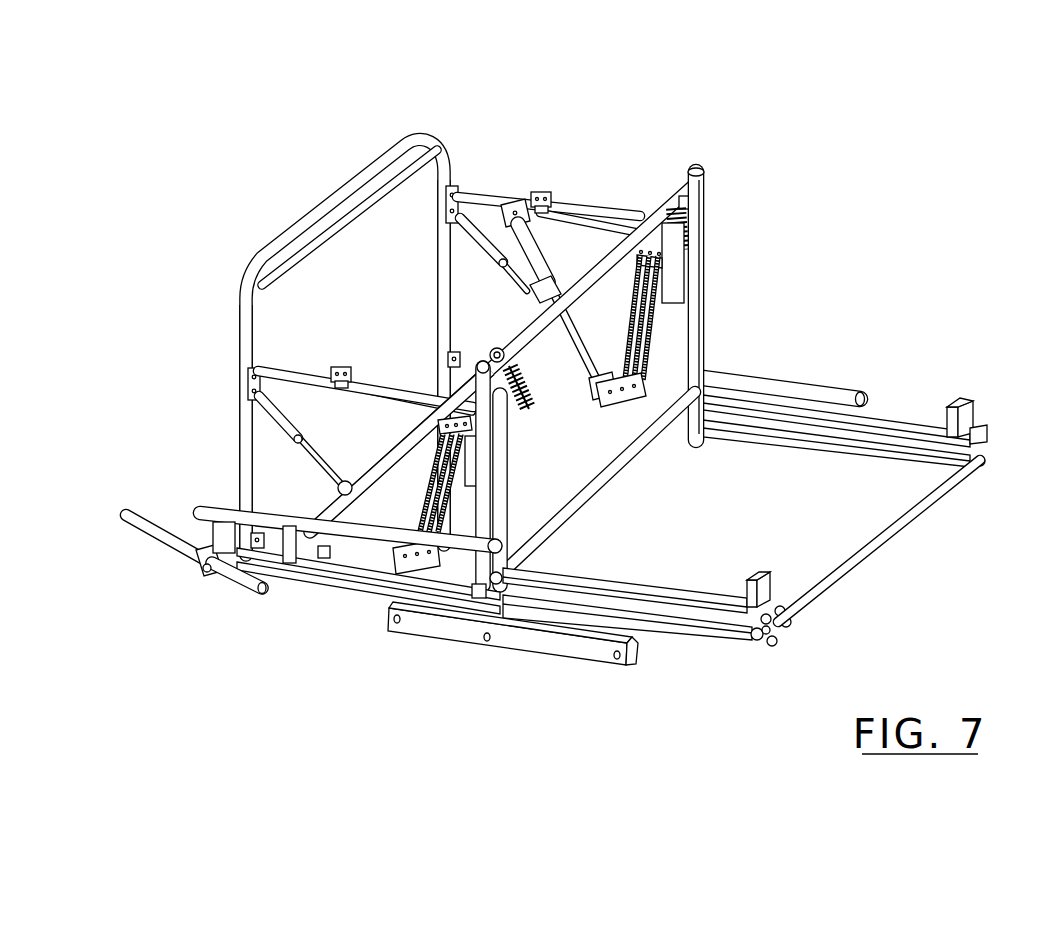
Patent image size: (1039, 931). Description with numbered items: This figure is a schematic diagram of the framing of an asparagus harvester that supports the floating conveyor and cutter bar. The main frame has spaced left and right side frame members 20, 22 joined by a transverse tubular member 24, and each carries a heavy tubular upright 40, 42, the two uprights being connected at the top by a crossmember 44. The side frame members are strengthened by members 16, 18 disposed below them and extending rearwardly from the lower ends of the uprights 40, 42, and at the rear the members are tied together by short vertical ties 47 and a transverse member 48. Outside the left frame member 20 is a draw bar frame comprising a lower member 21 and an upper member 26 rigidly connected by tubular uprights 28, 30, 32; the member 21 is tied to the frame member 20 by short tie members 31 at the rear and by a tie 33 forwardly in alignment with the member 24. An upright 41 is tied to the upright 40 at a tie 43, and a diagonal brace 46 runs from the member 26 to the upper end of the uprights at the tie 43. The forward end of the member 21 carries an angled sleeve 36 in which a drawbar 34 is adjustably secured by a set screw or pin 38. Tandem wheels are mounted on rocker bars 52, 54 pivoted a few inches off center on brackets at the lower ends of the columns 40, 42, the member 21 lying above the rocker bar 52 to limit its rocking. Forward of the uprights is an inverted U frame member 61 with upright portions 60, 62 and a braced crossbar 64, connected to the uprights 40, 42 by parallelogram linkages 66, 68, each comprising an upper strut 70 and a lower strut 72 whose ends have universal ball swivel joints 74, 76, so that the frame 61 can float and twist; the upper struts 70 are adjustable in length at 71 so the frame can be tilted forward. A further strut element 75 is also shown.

The frame member 16 is at (749, 648).
The frame member 18 is at (917, 458).
The left side frame member 20 is at (660, 588).
The draw bar frame member 21 is at (677, 631).
The right side frame member 22 is at (827, 398).
The transverse tubular member 24 is at (622, 470).
The draw bar frame member 26 is at (225, 504).
The tubular upright 28 is at (212, 536).
The tubular upright 30 is at (289, 562).
The short tie member 31 is at (783, 648).
The tubular upright 32 is at (470, 588).
The tie member 33 is at (497, 594).
The drawbar 34 is at (168, 550).
The sleeve 36 is at (182, 516).
The set screw or pin 38 is at (203, 569).
The tubular upright 40 is at (504, 468).
The upright 41 is at (673, 300).
The tubular upright 42 is at (700, 307).
The tie 43 is at (489, 352).
The crossmember 44 is at (620, 212).
The diagonal brace 46 is at (395, 458).
The short vertical tie 47 is at (990, 462).
The transverse member 48 is at (921, 520).
The rocker bar 52 is at (537, 644).
The rocker bar 54 is at (828, 428).
The upright portion 60 is at (253, 348).
The inverted U frame member 61 is at (330, 240).
The upright portion 62 is at (438, 277).
The braced crossbar 64 is at (330, 222).
The parallelogram linkage 66 is at (402, 394).
The parallelogram linkage 68 is at (478, 200).
The upper strut 70 is at (308, 384).
The length adjustment 71 is at (542, 191).
The lower strut 72 is at (322, 550).
The universal ball swivel joint 74 is at (453, 187).
The strut 75 is at (483, 257).
The universal ball swivel joint 76 is at (448, 358).